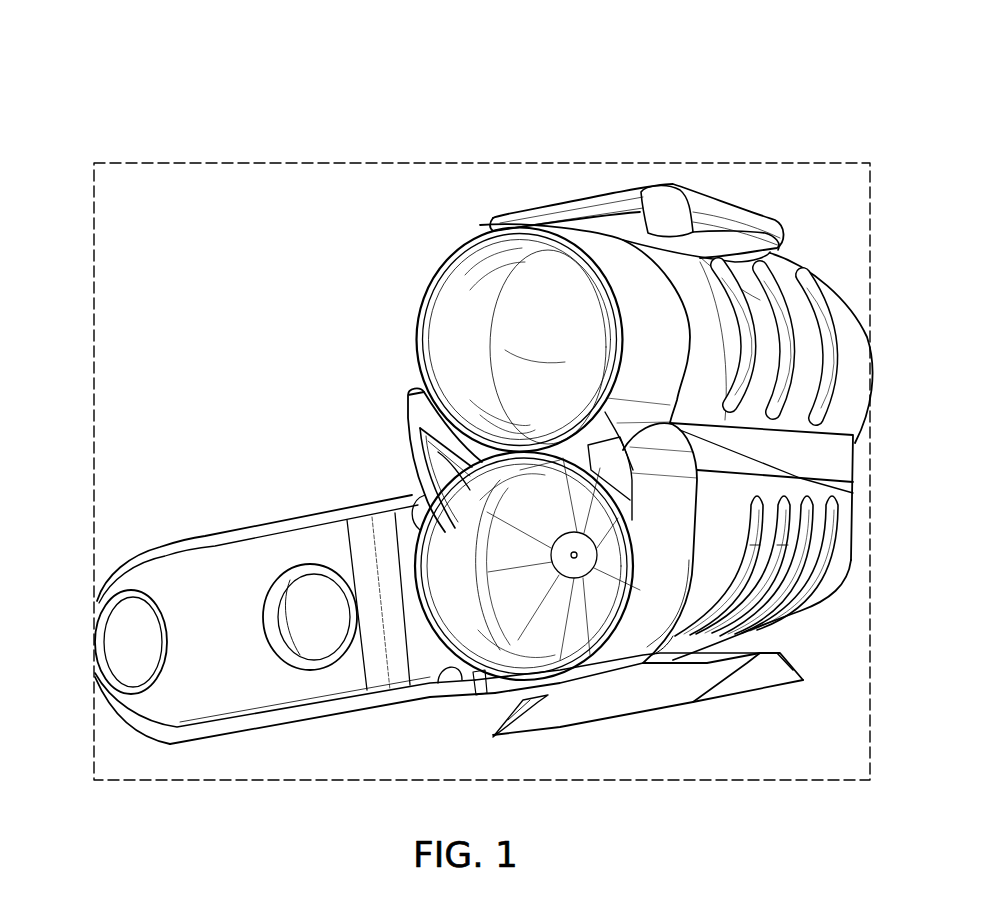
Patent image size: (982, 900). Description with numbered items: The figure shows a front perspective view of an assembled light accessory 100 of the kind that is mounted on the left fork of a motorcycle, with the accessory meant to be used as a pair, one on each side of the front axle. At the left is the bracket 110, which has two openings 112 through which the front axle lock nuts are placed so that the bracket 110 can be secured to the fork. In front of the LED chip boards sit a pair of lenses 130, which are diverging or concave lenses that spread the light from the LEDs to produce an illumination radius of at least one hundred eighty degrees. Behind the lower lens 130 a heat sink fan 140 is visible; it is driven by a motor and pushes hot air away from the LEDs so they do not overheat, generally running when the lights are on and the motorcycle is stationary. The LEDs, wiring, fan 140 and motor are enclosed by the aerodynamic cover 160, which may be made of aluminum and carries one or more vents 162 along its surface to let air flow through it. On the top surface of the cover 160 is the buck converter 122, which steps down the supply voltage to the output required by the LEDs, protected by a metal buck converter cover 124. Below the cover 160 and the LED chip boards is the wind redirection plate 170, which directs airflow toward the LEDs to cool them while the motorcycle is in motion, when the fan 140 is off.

The light accessory 100 is at (193, 68).
The bracket 110 is at (197, 570).
The openings 112 is at (310, 670).
The buck converter 122 is at (850, 318).
The buck converter cover 124 is at (790, 236).
The lenses 130 is at (467, 335).
The heat sink fan 140 is at (852, 494).
The cover 160 is at (855, 380).
The vents 162 is at (843, 342).
The wind redirection plate 170 is at (650, 700).